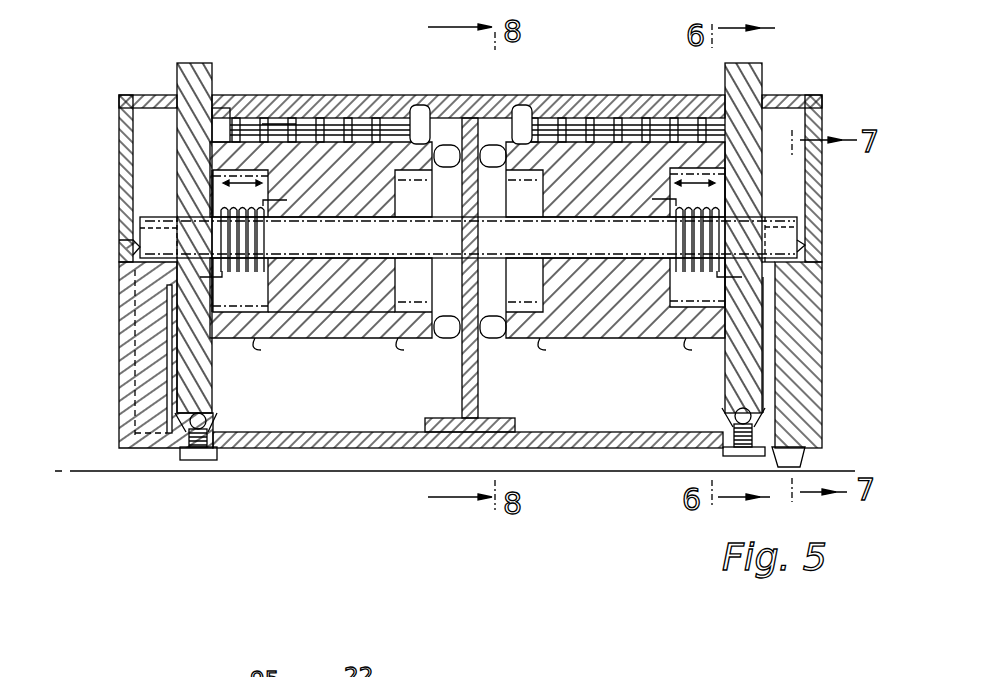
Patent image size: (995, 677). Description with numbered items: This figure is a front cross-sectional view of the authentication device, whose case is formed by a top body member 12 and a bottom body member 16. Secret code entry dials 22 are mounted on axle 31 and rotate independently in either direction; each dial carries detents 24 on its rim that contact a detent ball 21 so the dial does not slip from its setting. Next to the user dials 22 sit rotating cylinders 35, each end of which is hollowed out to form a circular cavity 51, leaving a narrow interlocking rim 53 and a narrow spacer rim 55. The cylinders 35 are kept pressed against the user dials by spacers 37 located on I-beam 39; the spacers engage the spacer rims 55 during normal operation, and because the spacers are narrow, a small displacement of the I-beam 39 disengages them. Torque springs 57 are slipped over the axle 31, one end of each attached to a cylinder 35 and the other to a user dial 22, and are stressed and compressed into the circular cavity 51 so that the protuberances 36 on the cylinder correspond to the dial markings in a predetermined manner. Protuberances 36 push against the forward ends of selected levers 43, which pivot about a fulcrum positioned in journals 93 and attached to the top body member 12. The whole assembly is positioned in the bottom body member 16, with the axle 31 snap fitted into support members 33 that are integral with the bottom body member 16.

The top body member 12 is at (119, 152).
The bottom body member 16 is at (125, 330).
The detent ball 21 is at (197, 425).
The secret code entry dial 22 is at (180, 66).
The detent 24 is at (195, 70).
The axle 31 is at (150, 222).
The support member 33 is at (130, 245).
The cylinder 35 is at (335, 335).
The protuberance 36 is at (268, 340).
The spacer 37 is at (440, 340).
The I-beam 39 is at (508, 424).
The lever 43 is at (238, 122).
The circular cavity 51 is at (258, 328).
The interlocking rim 53 is at (215, 330).
The spacer rim 55 is at (428, 146).
The torque spring 57 is at (272, 245).
The journal 93 is at (290, 124).